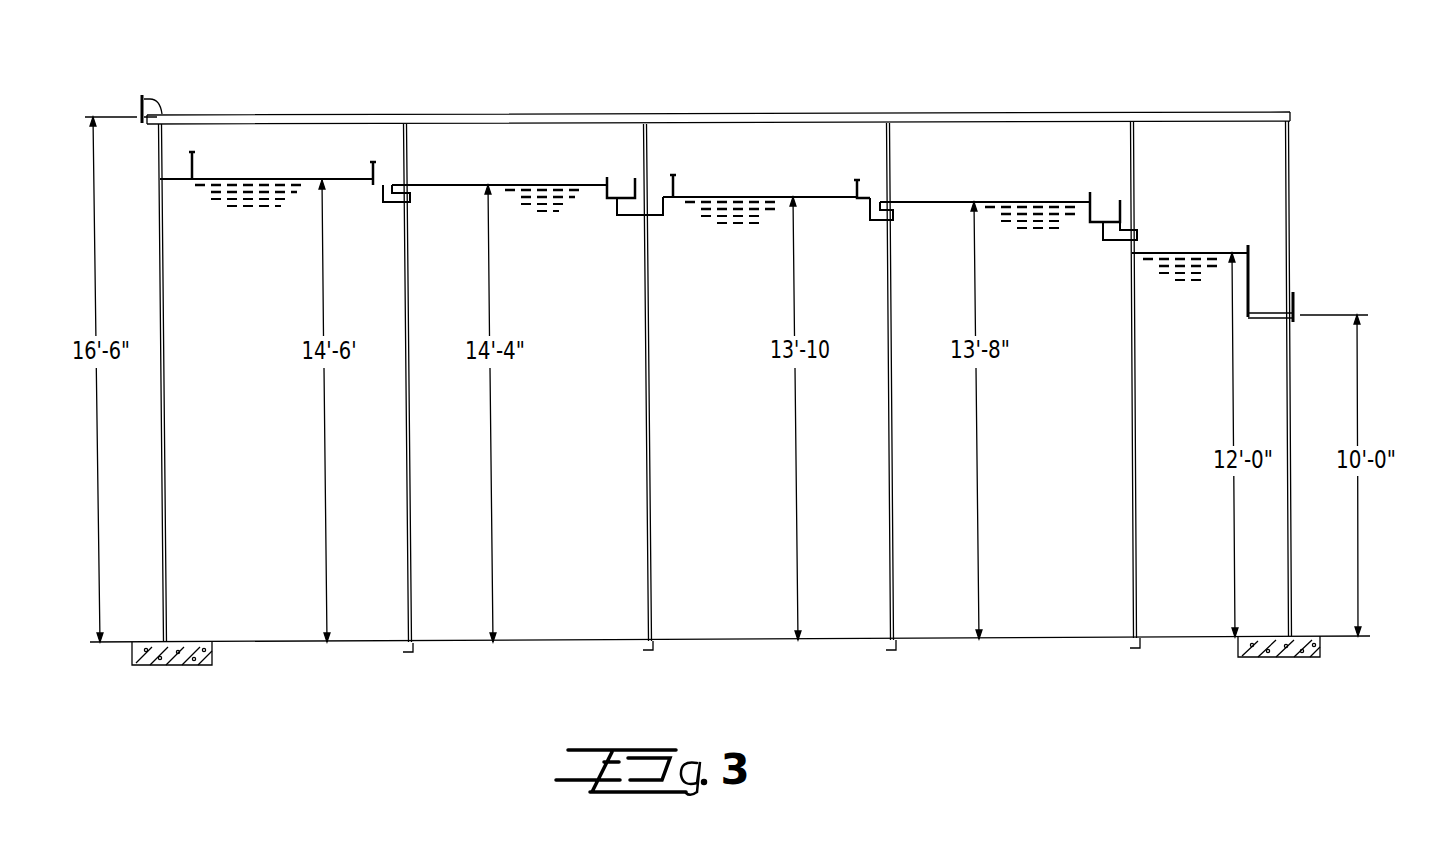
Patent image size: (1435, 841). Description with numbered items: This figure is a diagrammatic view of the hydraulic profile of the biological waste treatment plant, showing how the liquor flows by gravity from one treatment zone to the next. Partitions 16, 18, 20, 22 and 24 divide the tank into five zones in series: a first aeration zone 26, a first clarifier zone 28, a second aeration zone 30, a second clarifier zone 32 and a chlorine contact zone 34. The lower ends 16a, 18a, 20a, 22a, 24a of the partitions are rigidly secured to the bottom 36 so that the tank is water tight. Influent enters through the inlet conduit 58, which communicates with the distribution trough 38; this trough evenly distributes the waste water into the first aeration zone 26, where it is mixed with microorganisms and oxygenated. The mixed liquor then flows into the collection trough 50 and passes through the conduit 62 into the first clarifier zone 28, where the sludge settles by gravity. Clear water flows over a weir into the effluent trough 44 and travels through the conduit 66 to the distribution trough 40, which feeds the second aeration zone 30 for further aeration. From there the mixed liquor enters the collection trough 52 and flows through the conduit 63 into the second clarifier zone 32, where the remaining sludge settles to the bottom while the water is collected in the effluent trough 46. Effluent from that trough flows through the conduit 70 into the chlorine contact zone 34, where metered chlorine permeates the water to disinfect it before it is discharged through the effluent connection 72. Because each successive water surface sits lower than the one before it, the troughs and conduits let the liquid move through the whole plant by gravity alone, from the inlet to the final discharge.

The partition 16 is at (411, 411).
The partition 18 is at (651, 452).
The partition 20 is at (893, 430).
The partition 22 is at (1136, 437).
The partition 24 is at (165, 438).
The lower end of partition 16a is at (412, 640).
The lower end of partition 18a is at (655, 639).
The lower end of partition 20a is at (895, 639).
The lower end of partition 22a is at (1138, 638).
The lower end of partition 24a is at (168, 643).
The first aeration zone 26 is at (258, 117).
The first clarifier zone 28 is at (515, 117).
The second aeration zone 30 is at (722, 117).
The second clarifier zone 32 is at (990, 116).
The chlorine contact zone 34 is at (1200, 115).
The bottom 36 is at (727, 641).
The distribution trough 38 is at (178, 182).
The distribution trough 40 is at (668, 202).
The effluent trough 44 is at (610, 203).
The effluent trough 46 is at (1090, 222).
The collection trough 50 is at (372, 189).
The collection trough 52 is at (858, 203).
The inlet conduit 58 is at (158, 106).
The conduit 62 is at (398, 206).
The conduit 63 is at (882, 221).
The conduit 66 is at (634, 216).
The conduit 70 is at (1117, 240).
The effluent connection 72 is at (1298, 305).